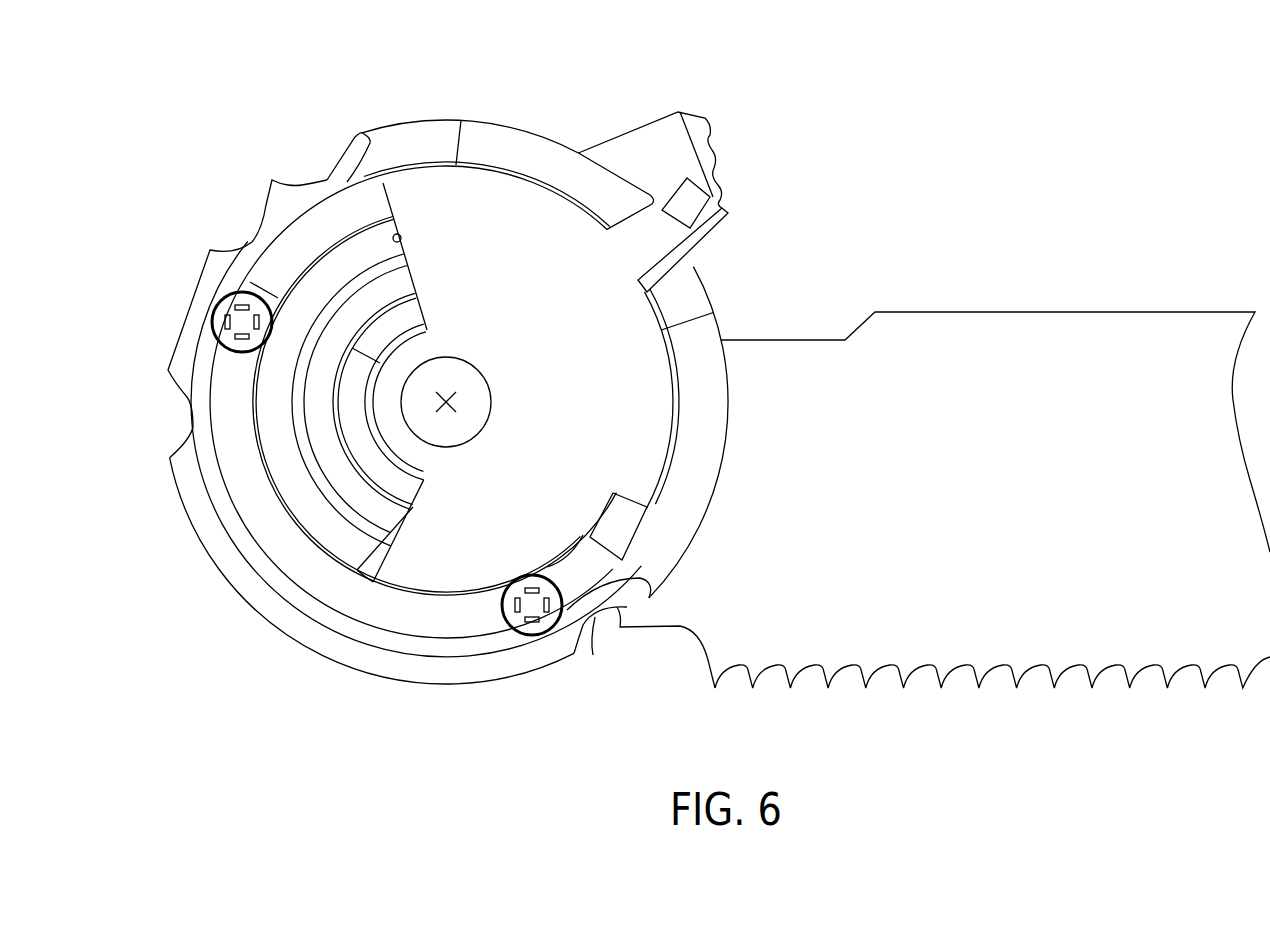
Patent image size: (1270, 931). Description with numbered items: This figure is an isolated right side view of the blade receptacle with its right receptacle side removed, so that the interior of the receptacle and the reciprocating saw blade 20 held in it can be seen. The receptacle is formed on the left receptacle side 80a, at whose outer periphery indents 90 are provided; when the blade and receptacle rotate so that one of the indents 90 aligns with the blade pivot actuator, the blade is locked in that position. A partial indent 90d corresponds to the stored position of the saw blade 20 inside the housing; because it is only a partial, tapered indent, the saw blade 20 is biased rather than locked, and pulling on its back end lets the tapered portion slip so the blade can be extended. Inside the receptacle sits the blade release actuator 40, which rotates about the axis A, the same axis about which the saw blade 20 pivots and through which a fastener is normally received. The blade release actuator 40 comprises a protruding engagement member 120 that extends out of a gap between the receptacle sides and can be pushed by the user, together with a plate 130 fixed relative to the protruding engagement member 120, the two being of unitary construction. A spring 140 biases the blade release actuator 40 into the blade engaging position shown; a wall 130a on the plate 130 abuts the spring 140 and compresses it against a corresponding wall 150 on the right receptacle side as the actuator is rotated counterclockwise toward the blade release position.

The reciprocating saw blade 20 is at (940, 338).
The blade release actuator 40 is at (700, 207).
The left receptacle side 80a is at (496, 143).
The indents 90 is at (187, 397).
The partial indent 90d is at (602, 627).
The protruding engagement member 120 is at (675, 110).
The plate 130 is at (537, 228).
The wall 130a is at (401, 238).
The spring 140 is at (373, 267).
The wall 150 is at (360, 548).
The axis A is at (450, 408).